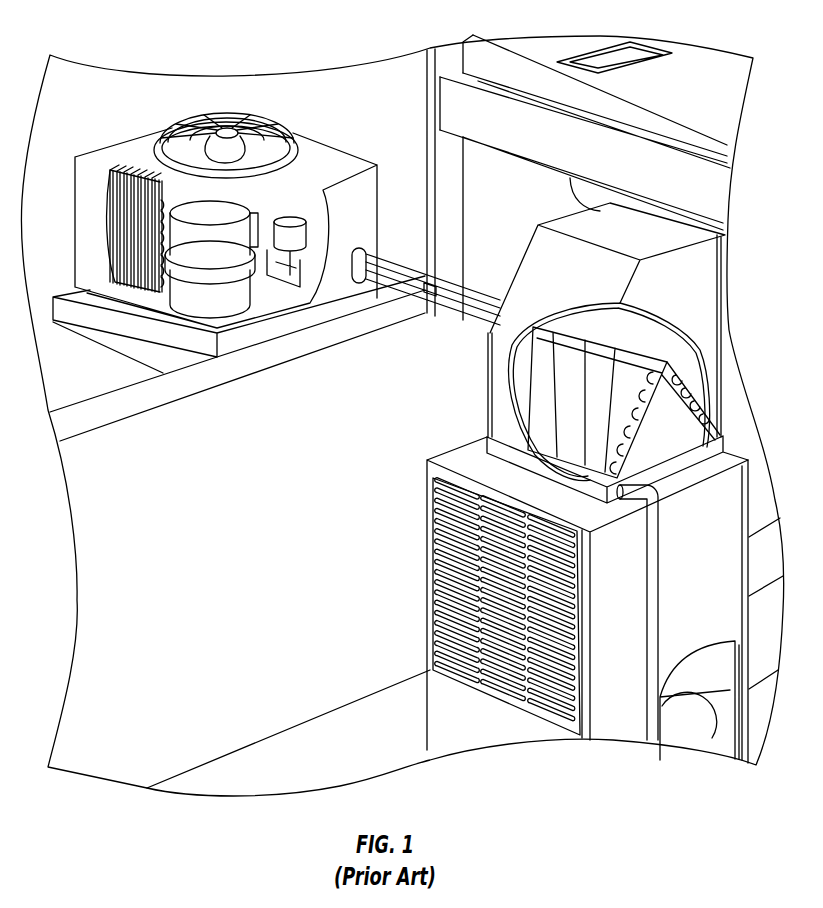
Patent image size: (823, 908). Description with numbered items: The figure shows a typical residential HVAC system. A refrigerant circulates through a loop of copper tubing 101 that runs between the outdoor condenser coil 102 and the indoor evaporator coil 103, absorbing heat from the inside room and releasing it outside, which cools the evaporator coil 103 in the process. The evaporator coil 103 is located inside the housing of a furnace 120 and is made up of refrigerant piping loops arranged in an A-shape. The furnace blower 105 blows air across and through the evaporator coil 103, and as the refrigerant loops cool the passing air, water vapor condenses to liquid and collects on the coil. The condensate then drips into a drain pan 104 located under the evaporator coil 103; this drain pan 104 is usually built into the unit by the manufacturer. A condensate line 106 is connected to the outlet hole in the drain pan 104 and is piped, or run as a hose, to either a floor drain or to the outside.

The copper tubing 101 is at (470, 312).
The outdoor condenser coil 102 is at (142, 172).
The evaporator coil 103 is at (533, 392).
The drain pan 104 is at (484, 434).
The furnace blower 105 is at (682, 713).
The condensate line 106 is at (658, 592).
The furnace 120 is at (731, 605).